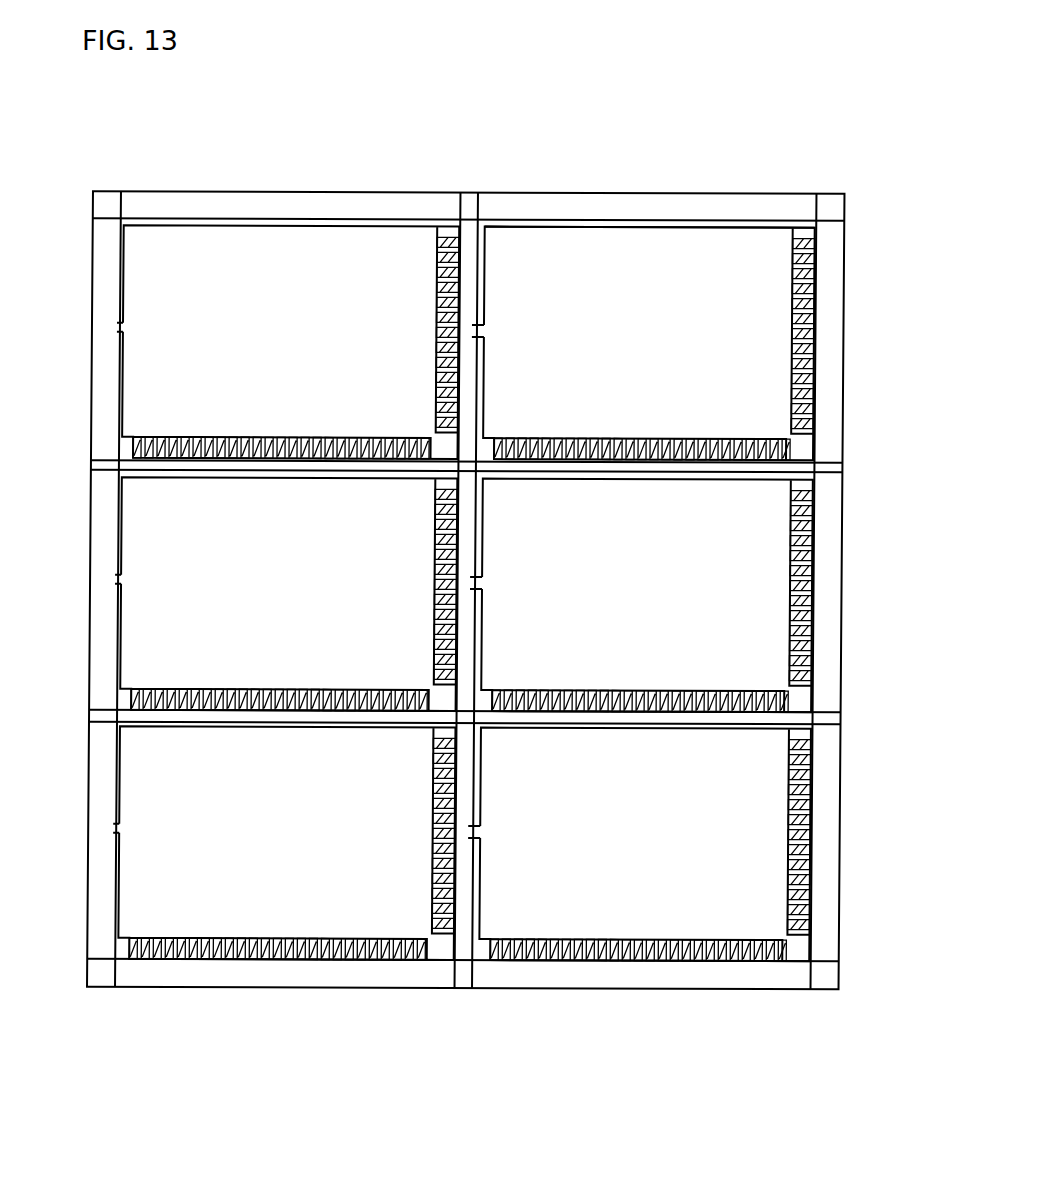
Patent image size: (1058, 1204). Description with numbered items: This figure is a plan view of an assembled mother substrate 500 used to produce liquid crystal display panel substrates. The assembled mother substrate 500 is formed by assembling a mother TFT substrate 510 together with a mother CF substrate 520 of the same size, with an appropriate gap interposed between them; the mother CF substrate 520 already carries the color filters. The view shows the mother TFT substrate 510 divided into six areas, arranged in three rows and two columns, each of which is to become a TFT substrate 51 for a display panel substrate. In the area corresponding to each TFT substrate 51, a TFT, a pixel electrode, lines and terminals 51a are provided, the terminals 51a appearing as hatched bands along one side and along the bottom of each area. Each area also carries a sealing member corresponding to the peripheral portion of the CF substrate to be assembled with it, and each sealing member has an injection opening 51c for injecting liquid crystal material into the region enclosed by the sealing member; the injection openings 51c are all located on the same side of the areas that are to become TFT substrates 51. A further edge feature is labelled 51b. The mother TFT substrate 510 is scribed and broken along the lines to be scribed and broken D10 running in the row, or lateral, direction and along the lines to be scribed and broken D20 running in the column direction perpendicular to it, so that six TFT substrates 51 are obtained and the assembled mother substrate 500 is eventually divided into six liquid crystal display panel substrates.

The assembled mother substrate 500 is at (515, 162).
The mother TFT substrate 510 is at (465, 546).
The mother CF substrate 520 is at (257, 192).
The lines to be scribed and broken in the row direction D10 is at (818, 228).
The lines to be scribed and broken in the column direction D20 is at (122, 205).
The TFT substrate 51 is at (813, 871).
The terminals 51a is at (793, 302).
The panel edge 51b is at (610, 230).
The injection opening 51c is at (126, 329).